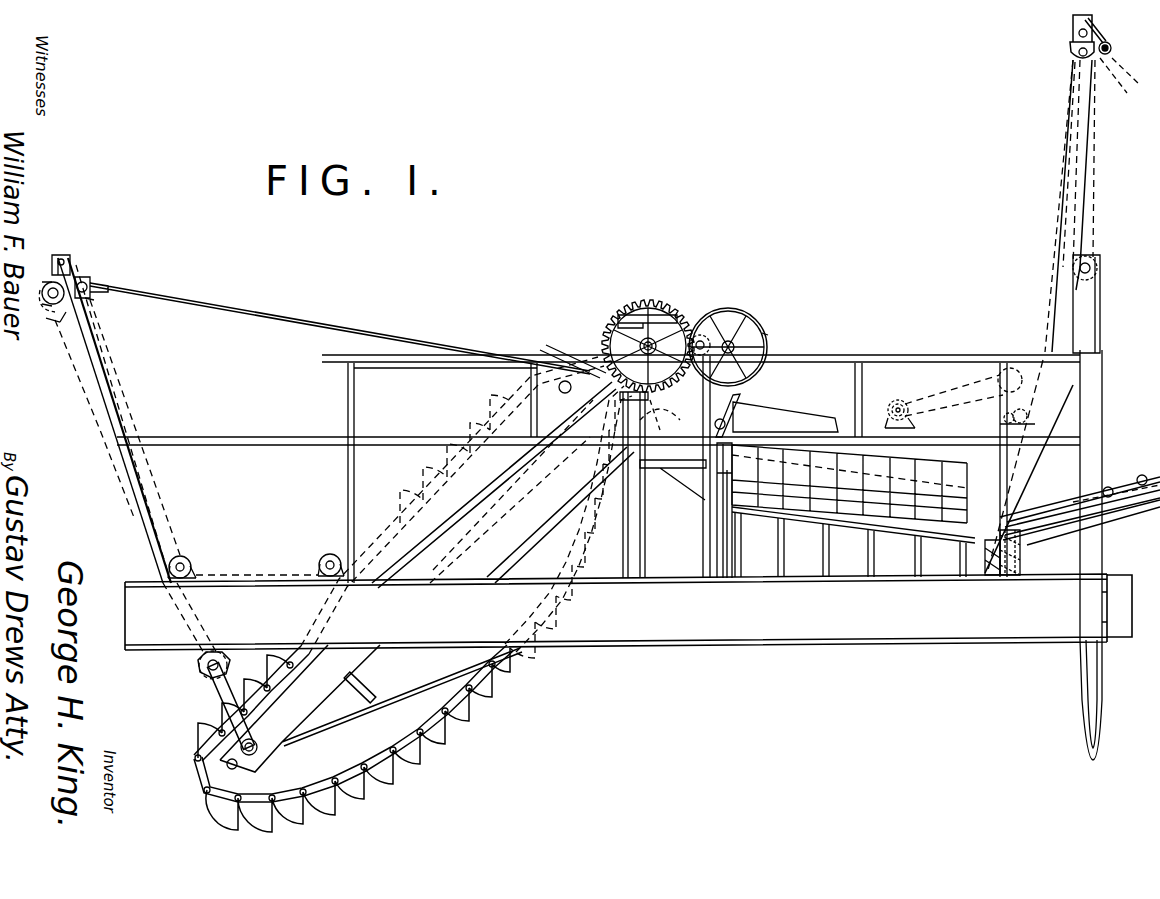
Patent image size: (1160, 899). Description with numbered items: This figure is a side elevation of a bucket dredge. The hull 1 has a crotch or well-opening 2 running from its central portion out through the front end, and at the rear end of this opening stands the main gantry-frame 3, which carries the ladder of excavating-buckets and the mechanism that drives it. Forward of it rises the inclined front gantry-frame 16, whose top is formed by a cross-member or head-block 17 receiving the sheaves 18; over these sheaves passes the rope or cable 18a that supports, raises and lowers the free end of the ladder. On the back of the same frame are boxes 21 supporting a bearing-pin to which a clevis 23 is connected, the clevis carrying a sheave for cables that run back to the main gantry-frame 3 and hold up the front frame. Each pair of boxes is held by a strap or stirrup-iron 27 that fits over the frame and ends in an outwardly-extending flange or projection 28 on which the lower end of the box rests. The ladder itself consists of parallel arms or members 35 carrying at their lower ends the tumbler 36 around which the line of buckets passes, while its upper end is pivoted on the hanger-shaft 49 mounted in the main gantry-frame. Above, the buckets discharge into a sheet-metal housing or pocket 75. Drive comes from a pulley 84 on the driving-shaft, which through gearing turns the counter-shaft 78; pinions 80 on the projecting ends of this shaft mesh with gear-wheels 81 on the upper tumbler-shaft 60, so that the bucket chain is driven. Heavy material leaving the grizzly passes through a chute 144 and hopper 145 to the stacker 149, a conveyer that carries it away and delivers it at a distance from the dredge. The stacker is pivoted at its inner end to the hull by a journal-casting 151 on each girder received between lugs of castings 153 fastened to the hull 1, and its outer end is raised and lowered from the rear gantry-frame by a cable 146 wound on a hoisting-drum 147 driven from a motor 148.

The hull 1 is at (845, 630).
The well-opening 2 is at (565, 646).
The main gantry-frame 3 is at (690, 551).
The inclined mast 16 is at (121, 494).
The head-block 17 is at (70, 262).
The sheaves 18 is at (42, 302).
The rope or cable 18a is at (66, 362).
The boxes 21 is at (91, 280).
The clevis 23 is at (107, 287).
The strap or stirrup-iron 27 is at (62, 258).
The flange or projection 28 is at (90, 294).
The arms or members 35 is at (328, 680).
The tumbler 36 is at (256, 766).
The hanger-shaft 49 is at (582, 368).
The upper tumbler-shaft 60 is at (672, 312).
The housing or pocket 75 is at (710, 410).
The counter-shaft 78 is at (741, 318).
The pinions 80 is at (733, 313).
The gear-wheels 81 is at (652, 302).
The pulley 84 is at (768, 333).
The chute 144 is at (1060, 480).
The hopper 145 is at (1066, 180).
The cable 146 is at (1050, 312).
The hoisting-drum 147 is at (1000, 362).
The motor 148 is at (898, 402).
The stacker 149 is at (1112, 506).
The journal-casting 151 is at (1030, 572).
The castings 153 is at (1018, 574).